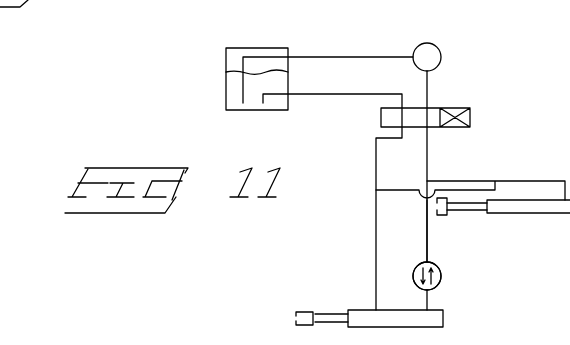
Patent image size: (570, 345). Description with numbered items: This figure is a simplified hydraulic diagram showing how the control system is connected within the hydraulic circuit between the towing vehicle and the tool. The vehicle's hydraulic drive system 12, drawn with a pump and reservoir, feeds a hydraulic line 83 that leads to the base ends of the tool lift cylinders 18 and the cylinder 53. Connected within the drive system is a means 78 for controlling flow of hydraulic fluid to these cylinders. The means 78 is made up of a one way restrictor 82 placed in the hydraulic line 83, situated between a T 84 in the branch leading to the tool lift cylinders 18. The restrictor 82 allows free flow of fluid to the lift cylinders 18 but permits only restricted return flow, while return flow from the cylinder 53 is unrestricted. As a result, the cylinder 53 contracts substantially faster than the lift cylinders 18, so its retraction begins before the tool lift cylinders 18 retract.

The hydraulic drive system 12 is at (441, 47).
The T 84 is at (429, 178).
The cylinder 53 is at (529, 213).
The hydraulic line 83 is at (427, 243).
The means for controlling flow 78 is at (452, 272).
The one way restrictor 82 is at (442, 285).
The hydraulic lift cylinders 18 is at (395, 318).